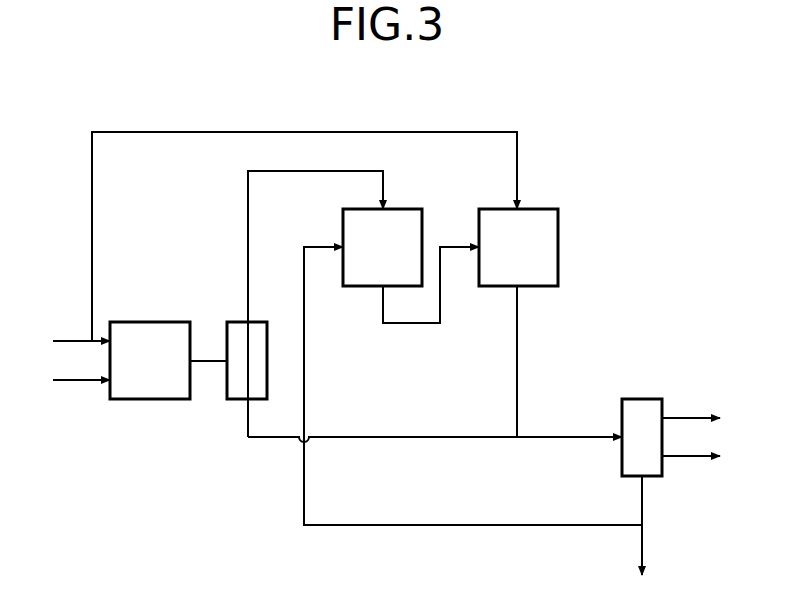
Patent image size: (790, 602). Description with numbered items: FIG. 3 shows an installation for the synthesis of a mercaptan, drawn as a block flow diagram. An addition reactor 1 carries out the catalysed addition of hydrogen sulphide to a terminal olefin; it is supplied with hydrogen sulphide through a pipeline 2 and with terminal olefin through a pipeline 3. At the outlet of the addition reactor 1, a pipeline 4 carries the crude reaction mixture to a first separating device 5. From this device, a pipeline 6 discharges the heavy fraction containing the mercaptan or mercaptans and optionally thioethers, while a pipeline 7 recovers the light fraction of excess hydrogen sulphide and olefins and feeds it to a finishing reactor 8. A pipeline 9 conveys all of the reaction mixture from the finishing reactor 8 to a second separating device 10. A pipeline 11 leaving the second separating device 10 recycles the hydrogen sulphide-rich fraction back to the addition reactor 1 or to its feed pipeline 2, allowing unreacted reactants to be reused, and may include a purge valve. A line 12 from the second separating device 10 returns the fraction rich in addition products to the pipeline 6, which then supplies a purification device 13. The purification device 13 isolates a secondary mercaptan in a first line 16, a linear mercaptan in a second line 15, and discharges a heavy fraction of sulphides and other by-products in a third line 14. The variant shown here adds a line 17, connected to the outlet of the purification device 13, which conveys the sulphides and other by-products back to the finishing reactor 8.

The addition reactor 1 is at (150, 400).
The pipeline 2 is at (58, 337).
The pipeline 3 is at (58, 385).
The pipeline 4 is at (208, 365).
The first separating device 5 is at (247, 360).
The pipeline 6 is at (412, 440).
The pipeline 7 is at (248, 247).
The finishing reactor 8 is at (343, 222).
The pipeline 9 is at (412, 324).
The second separating device 10 is at (558, 246).
The pipeline 11 is at (324, 131).
The line 12 is at (518, 360).
The purification device 13 is at (642, 437).
The third line 14 is at (642, 556).
The second line 15 is at (690, 462).
The first line 16 is at (690, 414).
The line 17 is at (412, 527).